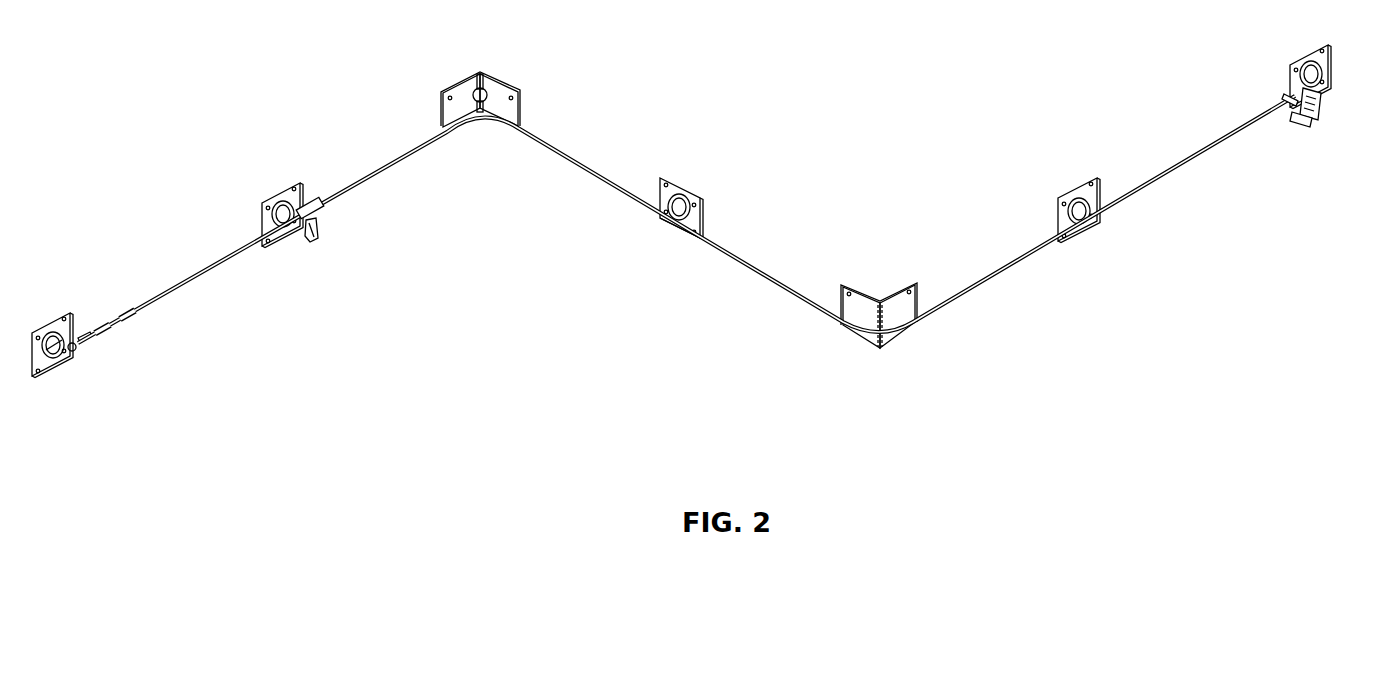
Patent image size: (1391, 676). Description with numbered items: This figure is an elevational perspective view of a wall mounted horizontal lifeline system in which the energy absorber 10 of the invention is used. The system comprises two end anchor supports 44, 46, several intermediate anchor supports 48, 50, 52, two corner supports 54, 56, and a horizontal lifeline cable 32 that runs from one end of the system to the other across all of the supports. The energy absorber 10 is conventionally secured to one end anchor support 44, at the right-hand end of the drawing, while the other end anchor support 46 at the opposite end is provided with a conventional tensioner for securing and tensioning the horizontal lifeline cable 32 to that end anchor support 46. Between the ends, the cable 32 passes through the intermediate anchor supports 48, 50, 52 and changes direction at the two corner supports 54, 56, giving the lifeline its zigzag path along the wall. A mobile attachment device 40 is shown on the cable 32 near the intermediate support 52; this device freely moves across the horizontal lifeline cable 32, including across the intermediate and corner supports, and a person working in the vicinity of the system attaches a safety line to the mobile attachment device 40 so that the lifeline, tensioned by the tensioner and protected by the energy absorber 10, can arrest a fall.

The energy absorber 10 is at (1313, 122).
The horizontal lifeline cable 32 is at (1208, 155).
The mobile attachment device 40 is at (322, 212).
The end anchor support 44 is at (1328, 82).
The end anchor support 46 is at (58, 357).
The intermediate anchor support 48 is at (1088, 212).
The intermediate anchor support 50 is at (667, 211).
The intermediate anchor support 52 is at (289, 219).
The corner support 54 is at (488, 104).
The corner support 56 is at (882, 328).